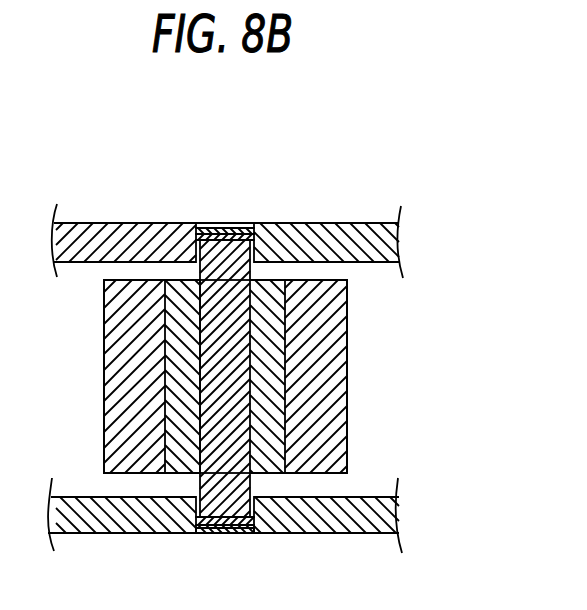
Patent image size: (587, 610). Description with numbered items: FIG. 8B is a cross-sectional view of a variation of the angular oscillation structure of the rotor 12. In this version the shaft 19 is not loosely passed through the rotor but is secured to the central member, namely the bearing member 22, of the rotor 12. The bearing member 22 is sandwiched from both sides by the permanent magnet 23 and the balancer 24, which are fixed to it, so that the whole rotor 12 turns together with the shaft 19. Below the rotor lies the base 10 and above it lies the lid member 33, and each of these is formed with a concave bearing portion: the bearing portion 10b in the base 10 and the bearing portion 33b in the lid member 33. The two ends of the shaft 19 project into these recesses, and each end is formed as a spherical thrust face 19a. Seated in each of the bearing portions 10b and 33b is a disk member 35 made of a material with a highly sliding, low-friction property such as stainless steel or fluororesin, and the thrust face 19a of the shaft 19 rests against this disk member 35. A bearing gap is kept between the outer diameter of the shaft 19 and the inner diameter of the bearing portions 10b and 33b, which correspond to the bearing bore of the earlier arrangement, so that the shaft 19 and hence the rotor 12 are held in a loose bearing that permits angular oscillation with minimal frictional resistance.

The lid member 33 is at (323, 235).
The bearing portion (concave portion) of the lid member 33b is at (198, 228).
The disk member 35 is at (212, 228).
The spherical thrust face 19a is at (249, 239).
The shaft 19 is at (251, 249).
The rotor 12 is at (431, 336).
The permanent magnet 23 is at (117, 380).
The bearing member 22 is at (277, 412).
The balancer 24 is at (335, 368).
The base 10 is at (318, 518).
The bearing portion (concave portion) of the base 10b is at (258, 519).